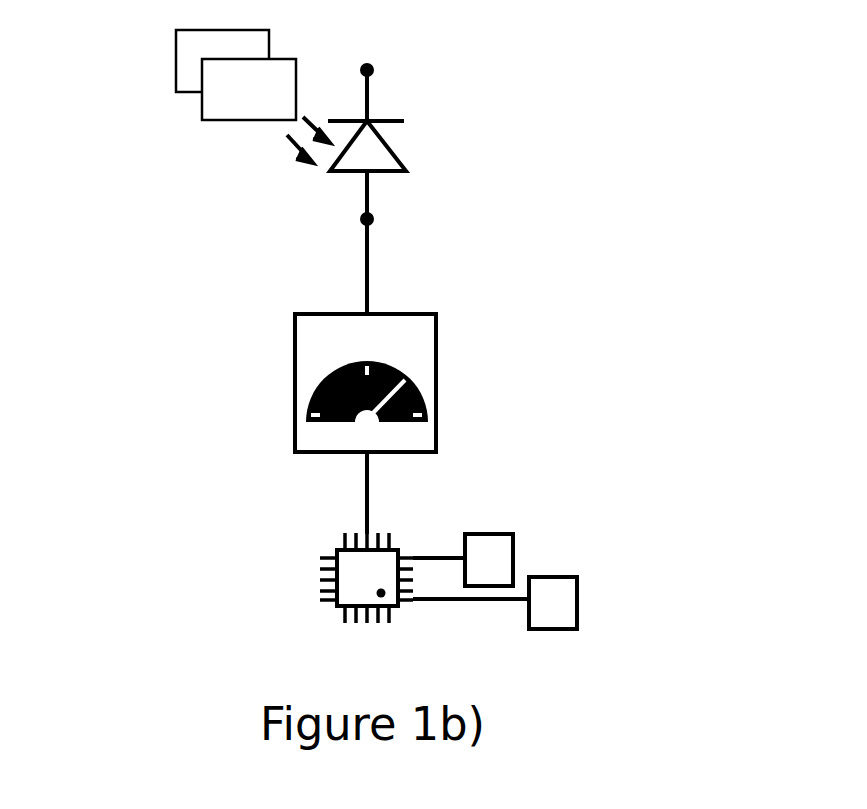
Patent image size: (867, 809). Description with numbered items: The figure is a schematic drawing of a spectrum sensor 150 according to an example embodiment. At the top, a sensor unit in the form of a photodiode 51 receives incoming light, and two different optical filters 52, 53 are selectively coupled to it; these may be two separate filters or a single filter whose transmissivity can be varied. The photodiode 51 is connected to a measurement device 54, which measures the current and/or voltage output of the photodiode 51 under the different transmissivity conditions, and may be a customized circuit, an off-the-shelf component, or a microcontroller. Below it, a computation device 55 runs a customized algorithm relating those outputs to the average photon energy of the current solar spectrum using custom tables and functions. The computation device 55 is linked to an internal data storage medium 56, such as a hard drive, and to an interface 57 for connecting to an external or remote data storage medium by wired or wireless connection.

The spectrum sensor 150 is at (558, 156).
The photodiode 51 is at (406, 167).
The optical filter 52 is at (176, 51).
The optical filter 53 is at (198, 112).
The measurement device 54 is at (288, 430).
The computation device 55 is at (320, 597).
The internal data storage medium 56 is at (522, 545).
The interface 57 is at (583, 596).